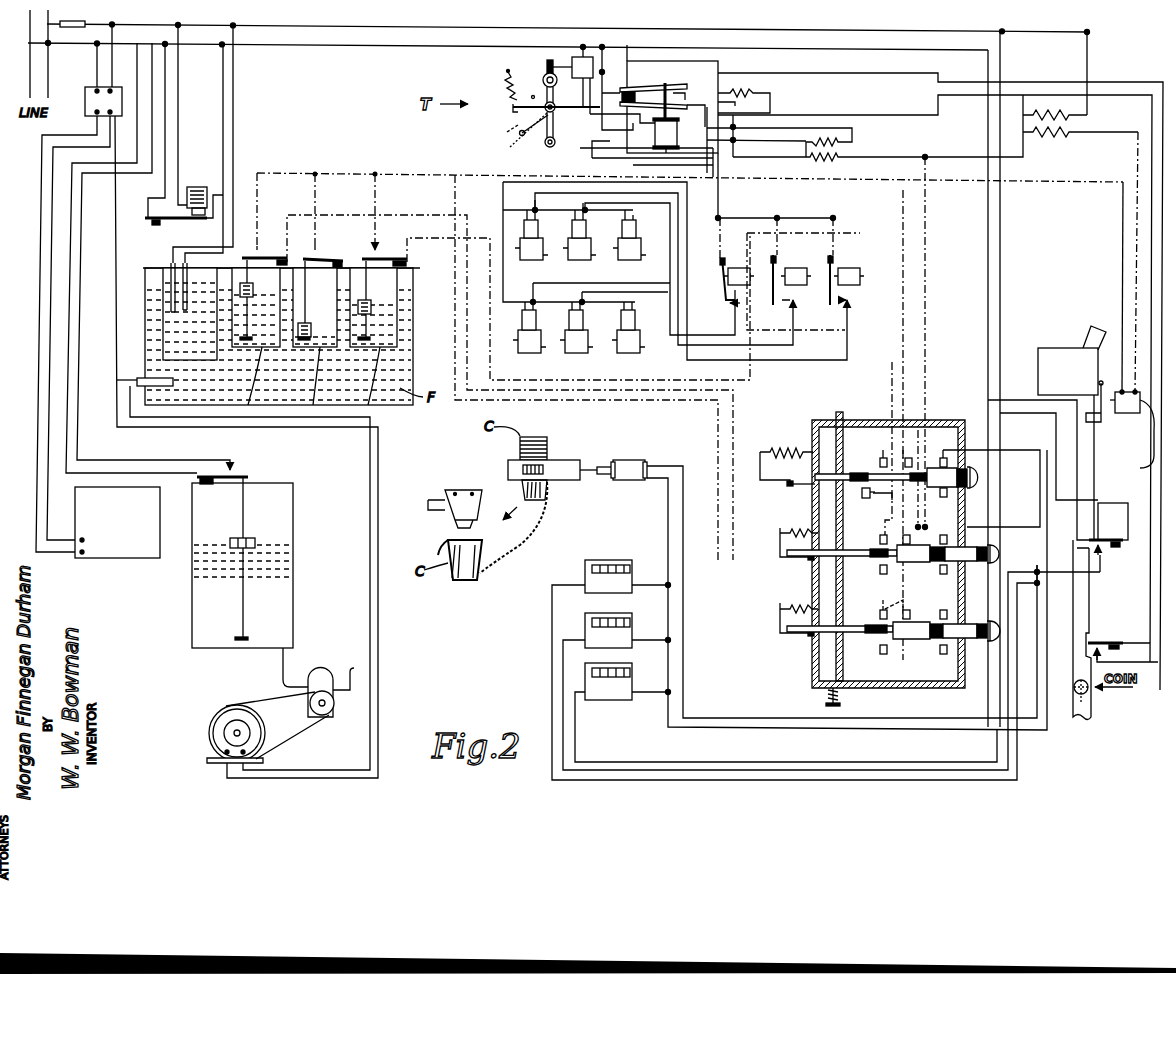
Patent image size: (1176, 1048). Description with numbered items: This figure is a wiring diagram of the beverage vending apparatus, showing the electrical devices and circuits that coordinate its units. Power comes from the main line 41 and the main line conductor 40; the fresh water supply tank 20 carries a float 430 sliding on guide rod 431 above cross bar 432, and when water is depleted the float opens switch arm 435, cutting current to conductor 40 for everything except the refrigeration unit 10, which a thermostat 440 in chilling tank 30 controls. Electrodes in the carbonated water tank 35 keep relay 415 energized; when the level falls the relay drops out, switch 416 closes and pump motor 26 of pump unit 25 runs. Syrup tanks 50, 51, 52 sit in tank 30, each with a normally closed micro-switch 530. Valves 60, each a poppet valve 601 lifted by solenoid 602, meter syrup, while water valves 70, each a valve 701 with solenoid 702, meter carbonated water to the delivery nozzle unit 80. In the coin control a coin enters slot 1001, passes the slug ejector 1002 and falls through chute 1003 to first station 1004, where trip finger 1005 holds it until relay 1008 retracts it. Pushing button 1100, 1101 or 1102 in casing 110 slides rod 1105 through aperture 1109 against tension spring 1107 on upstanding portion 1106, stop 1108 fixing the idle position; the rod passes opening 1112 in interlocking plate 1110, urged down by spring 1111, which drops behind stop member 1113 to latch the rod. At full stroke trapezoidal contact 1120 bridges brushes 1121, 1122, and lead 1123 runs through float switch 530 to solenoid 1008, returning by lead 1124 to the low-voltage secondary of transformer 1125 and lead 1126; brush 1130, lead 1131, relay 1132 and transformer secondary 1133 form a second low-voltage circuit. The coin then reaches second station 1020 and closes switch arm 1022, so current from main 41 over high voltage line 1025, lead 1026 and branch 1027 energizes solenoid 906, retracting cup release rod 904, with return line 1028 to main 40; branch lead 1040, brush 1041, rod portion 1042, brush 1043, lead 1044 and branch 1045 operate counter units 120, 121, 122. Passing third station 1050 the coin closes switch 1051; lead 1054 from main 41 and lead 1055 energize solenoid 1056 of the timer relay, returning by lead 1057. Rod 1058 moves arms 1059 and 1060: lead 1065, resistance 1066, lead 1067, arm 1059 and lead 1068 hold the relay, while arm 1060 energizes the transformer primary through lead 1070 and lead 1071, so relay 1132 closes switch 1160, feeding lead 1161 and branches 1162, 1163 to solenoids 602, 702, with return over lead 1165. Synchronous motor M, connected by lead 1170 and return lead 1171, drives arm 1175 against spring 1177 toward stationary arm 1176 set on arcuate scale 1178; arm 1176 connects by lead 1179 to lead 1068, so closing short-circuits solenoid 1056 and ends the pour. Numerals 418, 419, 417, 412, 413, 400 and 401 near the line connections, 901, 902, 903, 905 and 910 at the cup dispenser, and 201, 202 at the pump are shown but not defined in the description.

The main line 41 is at (324, 21).
The main line conductor 40 is at (306, 47).
The line conductor 418 is at (178, 123).
The line conductor 419 is at (165, 100).
The relay 415 is at (197, 187).
The switch 416 is at (182, 217).
The contact arm 417 is at (200, 224).
The wire 412 is at (222, 200).
The wire 413 is at (224, 217).
The electrode probe 400 is at (165, 266).
The electrode probe 401 is at (190, 268).
The water chilling tank 30 is at (410, 371).
The carbonated water tank 35 is at (163, 342).
The syrup tank 50 is at (248, 405).
The syrup tank 51 is at (314, 405).
The syrup tank 52 is at (370, 405).
The micro-switch 530 is at (268, 253).
The thermostat 440 is at (163, 383).
The circuit lead 1123 is at (447, 178).
The lead 1165 is at (503, 188).
The branch line 1163 is at (593, 285).
The solenoid-operated time-control valves 60 is at (562, 236).
The solenoid 602 is at (625, 233).
The poppet valve 601 is at (625, 251).
The electrically operated water valves 70 is at (562, 330).
The water valve solenoid 702 is at (625, 326).
The time-control valve 701 is at (625, 344).
The lead 1161 is at (720, 215).
The branch line 1162 is at (718, 265).
The high voltage circuit switch 1160 is at (720, 290).
The relay 1132 is at (733, 267).
The synchronous motor M is at (590, 43).
The switch arm 1175 is at (527, 100).
The spring 1177 is at (507, 80).
The lead 1179 is at (565, 144).
The arcuate scale 1178 is at (505, 131).
The stationary switch arm 1176 is at (505, 149).
The lead 1057 is at (607, 55).
The lead 1065 is at (665, 61).
The switch arm 1060 is at (648, 85).
The projecting rod 1058 is at (670, 84).
The switch arm 1059 is at (656, 109).
The lead 1071 is at (676, 92).
The solenoid 1056 is at (680, 131).
The lead 1068 is at (604, 135).
The lead 1170 is at (633, 162).
The return lead 1171 is at (580, 158).
The resistance 1066 is at (748, 90).
The lead 1067 is at (708, 100).
The lead 1054 is at (858, 72).
The lead 1055 is at (885, 113).
The lead 1070 is at (838, 124).
The transformer 1133 is at (822, 163).
The transformer 1125 is at (1072, 116).
The return lead 1124 is at (1137, 228).
The lead 1126 is at (925, 272).
The high voltage line 1025 is at (1000, 272).
The counter unit 120 is at (610, 556).
The branch 1045 is at (650, 584).
The counter unit 121 is at (595, 613).
The counter unit 122 is at (603, 702).
The lead 1044 is at (552, 641).
The chilled delivery nozzle unit 80 is at (452, 487).
The cup 902 is at (462, 583).
The cup stack 903 is at (520, 458).
The cup release rod 904 is at (563, 481).
The dispenser mechanism 910 is at (510, 468).
The plunger rod 905 is at (598, 465).
The solenoid 906 is at (630, 460).
The chute 901 is at (496, 535).
The branch 1027 is at (683, 500).
The return line 1028 is at (668, 515).
The lead 1026 is at (1064, 576).
The push button unit casing 110 is at (808, 675).
The interlocking plate 1110 is at (842, 413).
The stop member 1113 is at (830, 420).
The lead 1131 is at (892, 362).
The spring 1111 is at (822, 694).
The rod 1105 is at (803, 453).
The upstanding portion 1106 is at (778, 452).
The tension spring 1107 is at (790, 453).
The stop 1108 is at (790, 483).
The aperture 1109 is at (827, 487).
The opening 1112 is at (833, 490).
The push button 1100 is at (981, 478).
The brush 1041 is at (950, 462).
The contact portion 1042 is at (943, 493).
The brush 1043 is at (967, 517).
The branch lead 1040 is at (1020, 448).
The brush 1130 is at (881, 456).
The trapezoidal contact member 1120 is at (893, 474).
The brush 1121 is at (912, 462).
The brush 1122 is at (873, 495).
The push button 1101 is at (1000, 560).
The push button 1102 is at (1000, 625).
The slug detecting and ejecting mechanism 1002 is at (1049, 348).
The coin slot 1001 is at (1088, 330).
The trip finger 1005 is at (1108, 418).
The first station 1004 is at (1090, 440).
The coin chute 1003 is at (1088, 457).
The relay 1008 is at (1140, 468).
The second coin station 1020 is at (1089, 537).
The switch arm 1022 is at (1110, 553).
The third station 1050 is at (1088, 634).
The switch 1051 is at (1106, 641).
The refrigeration unit 10 is at (128, 555).
The fresh water supply tank 20 is at (293, 512).
The switch arm 435 is at (233, 474).
The guide rod 431 is at (242, 502).
The float 430 is at (230, 538).
The cross bar 432 is at (237, 638).
The pipe 201 is at (283, 668).
The pump unit 25 is at (325, 665).
The pipe 202 is at (351, 676).
The pump motor 26 is at (227, 712).